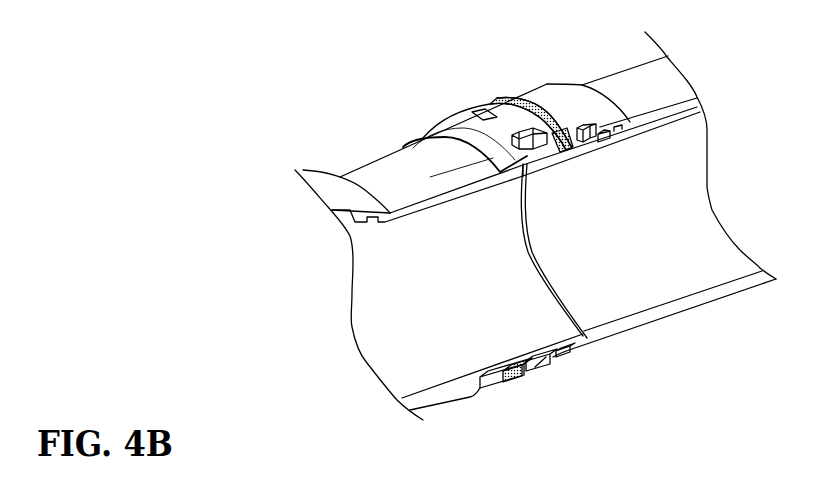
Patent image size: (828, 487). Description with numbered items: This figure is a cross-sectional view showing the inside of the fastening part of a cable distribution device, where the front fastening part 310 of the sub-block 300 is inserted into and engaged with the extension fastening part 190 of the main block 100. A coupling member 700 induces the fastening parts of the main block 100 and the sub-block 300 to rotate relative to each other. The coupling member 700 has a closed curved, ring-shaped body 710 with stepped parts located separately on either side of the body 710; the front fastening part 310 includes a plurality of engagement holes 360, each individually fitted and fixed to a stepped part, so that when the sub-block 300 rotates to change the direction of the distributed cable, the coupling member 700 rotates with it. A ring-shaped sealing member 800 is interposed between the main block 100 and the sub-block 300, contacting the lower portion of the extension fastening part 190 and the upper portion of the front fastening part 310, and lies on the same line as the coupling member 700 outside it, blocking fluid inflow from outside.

The main block 100 is at (693, 102).
The extension fastening part 190 is at (550, 92).
The sub-block 300 is at (377, 177).
The front fastening part 310 is at (423, 133).
The engagement holes 360 is at (470, 113).
The coupling member 700 is at (500, 100).
The body 710 is at (518, 380).
The sealing member 800 is at (562, 348).